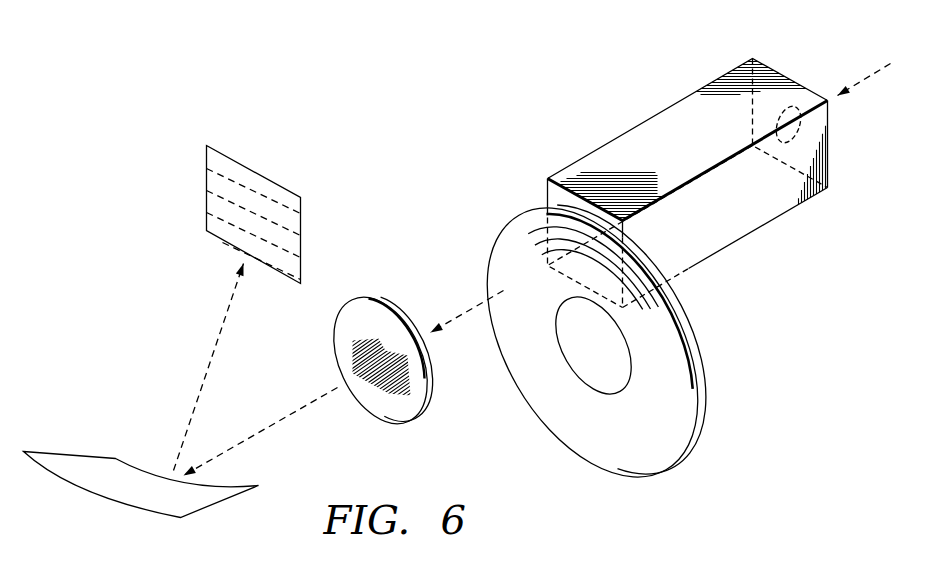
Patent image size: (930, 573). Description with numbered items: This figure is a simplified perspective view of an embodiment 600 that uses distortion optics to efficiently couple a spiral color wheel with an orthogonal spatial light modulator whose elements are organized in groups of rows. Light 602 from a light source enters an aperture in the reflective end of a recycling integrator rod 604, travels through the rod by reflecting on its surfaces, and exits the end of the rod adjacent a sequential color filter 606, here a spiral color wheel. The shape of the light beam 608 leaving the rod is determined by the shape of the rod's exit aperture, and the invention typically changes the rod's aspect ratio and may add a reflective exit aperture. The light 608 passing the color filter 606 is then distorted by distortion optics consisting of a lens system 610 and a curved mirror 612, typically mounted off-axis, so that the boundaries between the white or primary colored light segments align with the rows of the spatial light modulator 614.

The optical system 600 is at (104, 242).
The light 602 is at (873, 74).
The recycling integrator rod 604 is at (662, 120).
The sequential color filter 606 is at (588, 452).
The light beam 608 is at (468, 312).
The lens system 610 is at (388, 414).
The curved mirror 612 is at (97, 493).
The spatial light modulator 614 is at (253, 170).